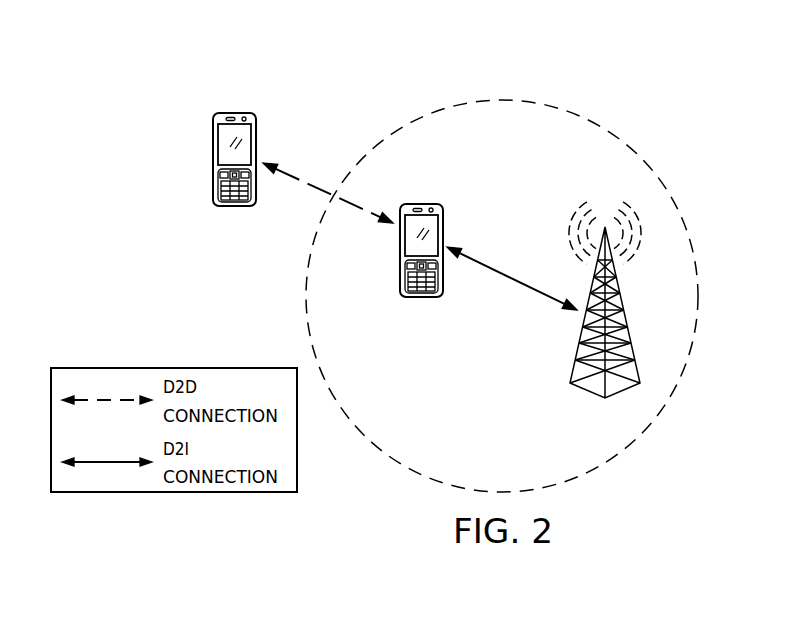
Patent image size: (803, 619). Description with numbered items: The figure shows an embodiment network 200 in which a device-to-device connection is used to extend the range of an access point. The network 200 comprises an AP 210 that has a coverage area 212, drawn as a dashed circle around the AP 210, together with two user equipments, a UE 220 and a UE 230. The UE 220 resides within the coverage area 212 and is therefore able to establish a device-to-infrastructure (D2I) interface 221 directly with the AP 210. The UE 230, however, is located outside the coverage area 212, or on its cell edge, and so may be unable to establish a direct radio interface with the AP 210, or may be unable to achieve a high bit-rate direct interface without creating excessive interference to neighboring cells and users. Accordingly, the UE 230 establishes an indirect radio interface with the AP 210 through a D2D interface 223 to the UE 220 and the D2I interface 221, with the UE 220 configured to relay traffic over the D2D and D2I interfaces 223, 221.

The network 200 is at (599, 69).
The AP 210 is at (585, 390).
The coverage area 212 is at (661, 169).
The UE 220 is at (421, 298).
The D2I interface 221 is at (510, 280).
The D2D interface 223 is at (303, 178).
The UE 230 is at (213, 160).